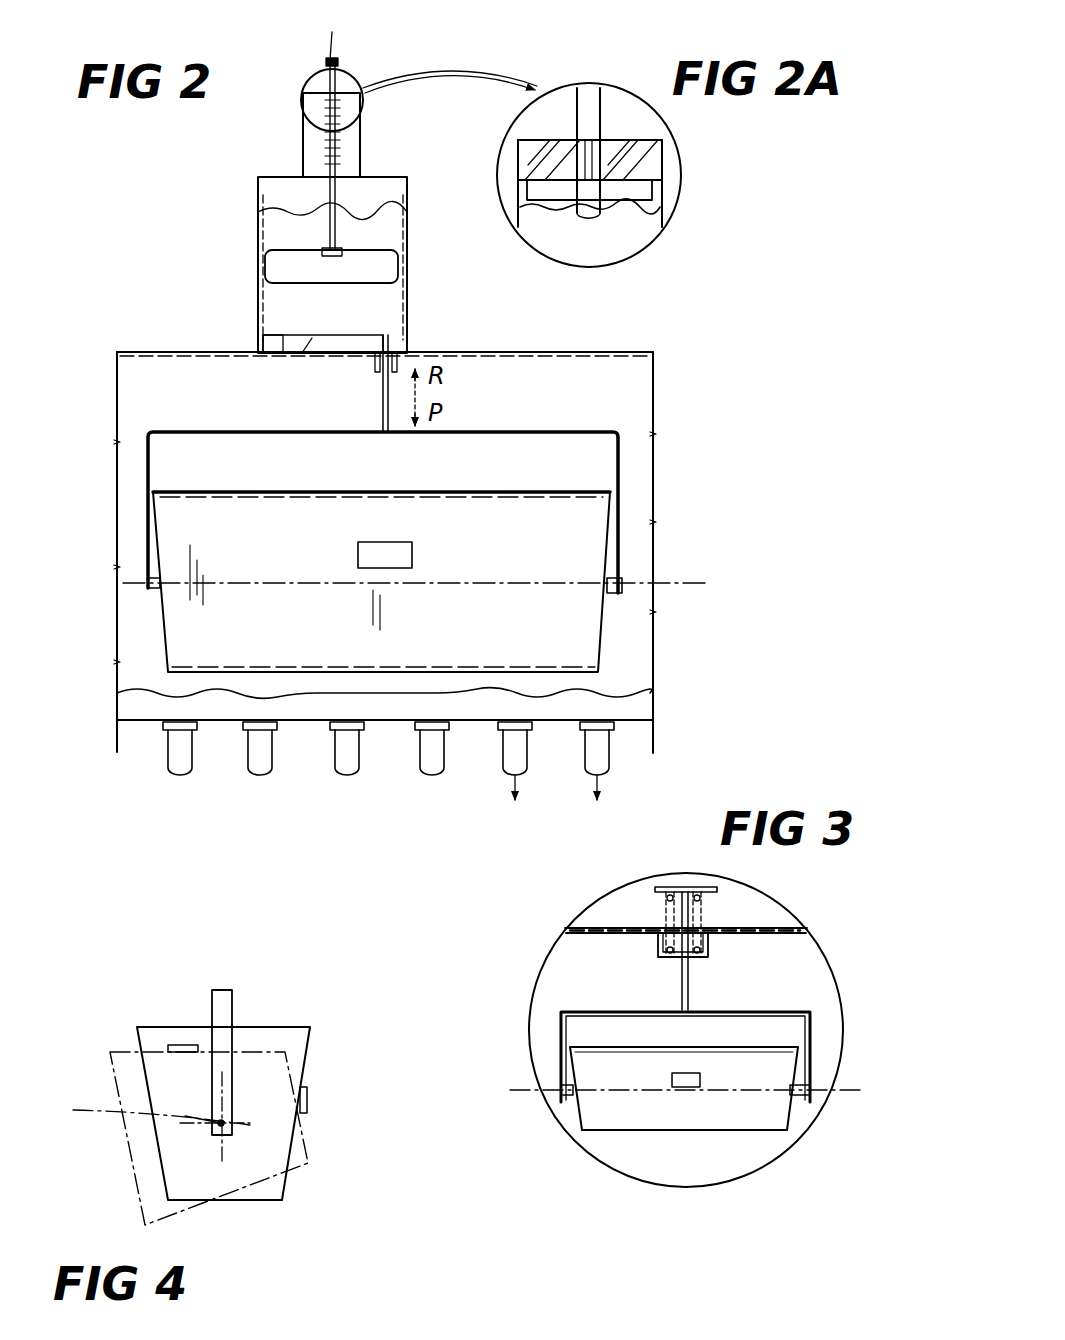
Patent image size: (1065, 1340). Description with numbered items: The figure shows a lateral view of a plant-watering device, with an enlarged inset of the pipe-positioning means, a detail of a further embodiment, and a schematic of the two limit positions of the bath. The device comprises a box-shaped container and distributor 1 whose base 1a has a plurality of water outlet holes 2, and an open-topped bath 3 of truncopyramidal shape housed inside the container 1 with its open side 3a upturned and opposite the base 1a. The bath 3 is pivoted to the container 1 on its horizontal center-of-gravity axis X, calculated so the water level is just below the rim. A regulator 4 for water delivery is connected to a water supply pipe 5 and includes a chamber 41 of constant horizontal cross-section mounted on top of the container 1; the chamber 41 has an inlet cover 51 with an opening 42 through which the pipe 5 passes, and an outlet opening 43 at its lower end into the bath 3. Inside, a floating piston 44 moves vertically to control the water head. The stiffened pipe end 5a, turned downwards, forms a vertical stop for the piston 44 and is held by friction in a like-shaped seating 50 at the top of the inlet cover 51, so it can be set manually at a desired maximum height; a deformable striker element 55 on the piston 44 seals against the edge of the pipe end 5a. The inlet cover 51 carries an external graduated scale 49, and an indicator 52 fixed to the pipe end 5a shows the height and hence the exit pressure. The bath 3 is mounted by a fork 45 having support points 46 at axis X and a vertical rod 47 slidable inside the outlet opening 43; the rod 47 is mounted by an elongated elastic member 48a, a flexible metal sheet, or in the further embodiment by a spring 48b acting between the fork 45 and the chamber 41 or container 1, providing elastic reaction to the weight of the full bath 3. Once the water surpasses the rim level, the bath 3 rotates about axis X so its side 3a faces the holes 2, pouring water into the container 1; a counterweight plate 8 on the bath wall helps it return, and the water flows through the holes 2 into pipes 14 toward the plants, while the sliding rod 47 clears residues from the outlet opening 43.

In FIG. 2, the container and distributor 1 is at (633, 663).
In FIG. 3, the container and distributor 1 is at (780, 955).
In FIG. 2, the container base 1a is at (480, 742).
In FIG. 2, the water outlet holes 2 is at (175, 725).
In FIG. 2, the open-topped bath 3 is at (185, 633).
In FIG. 3, the open-topped bath 3 is at (770, 1060).
In FIG. 4, the open-topped bath 3 is at (277, 1020).
In FIG. 2, the open side of the bath 3a is at (208, 482).
In FIG. 4, the open side of the bath 3a is at (110, 1078).
In FIG. 2, the regulator 4 is at (230, 320).
In FIG. 2, the water supply pipe 5 is at (342, 93).
In FIG. 2A, the water supply pipe 5 is at (585, 103).
In FIG. 2, the pipe end 5a is at (338, 230).
In FIG. 2A, the pipe end 5a is at (590, 197).
In FIG. 2, the plate 8 is at (410, 547).
In FIG. 3, the plate 8 is at (683, 1082).
In FIG. 4, the plate 8 is at (192, 1045).
In FIG. 2, the pipes 14 is at (428, 753).
In FIG. 2, the chamber 41 is at (283, 227).
In FIG. 2A, the opening 42 is at (603, 130).
In FIG. 2, the outlet opening 43 is at (400, 348).
In FIG. 3, the outlet opening 43 is at (668, 957).
In FIG. 2, the floating piston 44 is at (375, 267).
In FIG. 2, the fork 45 is at (575, 432).
In FIG. 3, the fork 45 is at (770, 1015).
In FIG. 4, the fork 45 is at (220, 995).
In FIG. 2, the support points 46 is at (150, 590).
In FIG. 3, the support points 46 is at (800, 1090).
In FIG. 2, the vertical rod 47 is at (383, 393).
In FIG. 3, the vertical rod 47 is at (683, 993).
In FIG. 2, the elongated elastic member 48a is at (287, 352).
In FIG. 3, the spring 48b is at (665, 905).
In FIG. 2, the graduated scale 49 is at (353, 140).
In FIG. 2A, the graduated scale 49 is at (620, 235).
In FIG. 2A, the seating 50 is at (630, 147).
In FIG. 2, the inlet cover 51 is at (297, 153).
In FIG. 2A, the inlet cover 51 is at (664, 167).
In FIG. 2, the indicator 52 is at (320, 133).
In FIG. 2, the striker element 55 is at (338, 250).
In FIG. 2, the horizontal center of gravity axis X is at (180, 557).
In FIG. 3, the horizontal center of gravity axis X is at (522, 1090).
In FIG. 4, the horizontal center of gravity axis X is at (147, 1126).